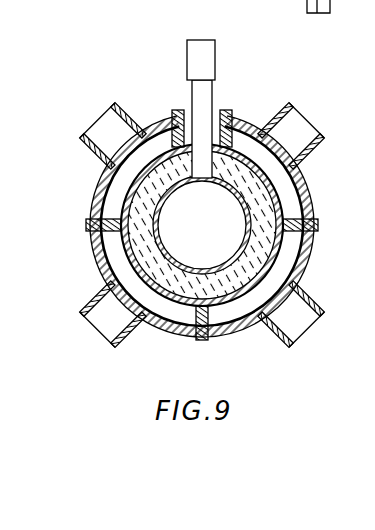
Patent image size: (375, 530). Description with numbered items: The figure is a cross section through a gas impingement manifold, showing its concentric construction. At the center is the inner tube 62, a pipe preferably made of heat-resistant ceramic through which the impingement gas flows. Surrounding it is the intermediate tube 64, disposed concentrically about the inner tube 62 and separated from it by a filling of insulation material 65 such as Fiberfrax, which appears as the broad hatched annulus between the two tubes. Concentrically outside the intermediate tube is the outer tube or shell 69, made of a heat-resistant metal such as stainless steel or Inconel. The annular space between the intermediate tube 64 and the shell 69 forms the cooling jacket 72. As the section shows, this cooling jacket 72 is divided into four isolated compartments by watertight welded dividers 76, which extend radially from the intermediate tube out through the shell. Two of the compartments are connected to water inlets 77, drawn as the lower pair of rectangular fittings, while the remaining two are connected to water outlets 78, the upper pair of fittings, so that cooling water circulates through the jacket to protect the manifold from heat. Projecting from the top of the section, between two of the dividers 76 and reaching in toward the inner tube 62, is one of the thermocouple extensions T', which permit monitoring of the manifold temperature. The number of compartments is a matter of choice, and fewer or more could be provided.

The inner tube 62 is at (203, 270).
The intermediate tube 64 is at (278, 246).
The insulation material 65 is at (284, 262).
The outer tube or shell 69 is at (310, 184).
The cooling jacket 72 is at (108, 189).
The dividers 76 is at (87, 224).
The water inlets 77 is at (103, 318).
The water outlets 78 is at (111, 118).
The thermocouple extensions T' is at (199, 95).